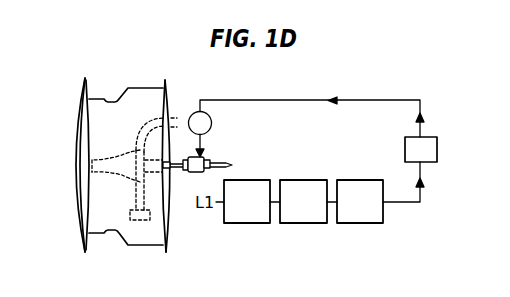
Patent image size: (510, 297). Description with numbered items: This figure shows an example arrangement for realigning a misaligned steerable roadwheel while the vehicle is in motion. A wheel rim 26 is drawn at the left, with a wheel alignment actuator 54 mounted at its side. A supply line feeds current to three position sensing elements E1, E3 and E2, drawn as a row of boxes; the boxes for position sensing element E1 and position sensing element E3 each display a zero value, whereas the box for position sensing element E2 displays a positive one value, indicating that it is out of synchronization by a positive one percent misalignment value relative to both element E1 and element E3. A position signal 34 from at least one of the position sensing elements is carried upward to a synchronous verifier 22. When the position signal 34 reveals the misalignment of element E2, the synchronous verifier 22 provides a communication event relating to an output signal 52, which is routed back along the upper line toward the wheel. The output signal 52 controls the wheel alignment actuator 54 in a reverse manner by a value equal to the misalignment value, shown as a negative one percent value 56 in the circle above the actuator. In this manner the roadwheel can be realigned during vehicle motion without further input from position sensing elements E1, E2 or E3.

The wheel rim 26 is at (78, 241).
The wheel alignment actuator 54 is at (207, 157).
The negative one percent value 56 is at (195, 112).
The output signal 52 is at (372, 99).
The synchronous verifier 22 is at (405, 145).
The position signal 34 is at (416, 204).
The position sensing element E1 is at (261, 224).
The position sensing element E3 is at (317, 224).
The position sensing element E2 is at (373, 224).